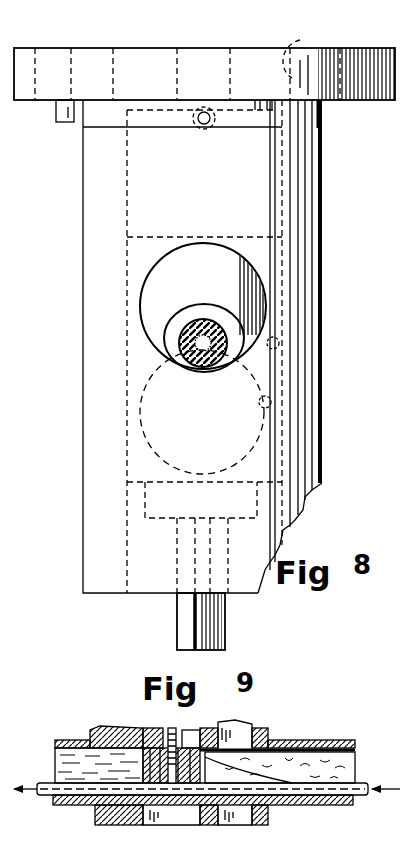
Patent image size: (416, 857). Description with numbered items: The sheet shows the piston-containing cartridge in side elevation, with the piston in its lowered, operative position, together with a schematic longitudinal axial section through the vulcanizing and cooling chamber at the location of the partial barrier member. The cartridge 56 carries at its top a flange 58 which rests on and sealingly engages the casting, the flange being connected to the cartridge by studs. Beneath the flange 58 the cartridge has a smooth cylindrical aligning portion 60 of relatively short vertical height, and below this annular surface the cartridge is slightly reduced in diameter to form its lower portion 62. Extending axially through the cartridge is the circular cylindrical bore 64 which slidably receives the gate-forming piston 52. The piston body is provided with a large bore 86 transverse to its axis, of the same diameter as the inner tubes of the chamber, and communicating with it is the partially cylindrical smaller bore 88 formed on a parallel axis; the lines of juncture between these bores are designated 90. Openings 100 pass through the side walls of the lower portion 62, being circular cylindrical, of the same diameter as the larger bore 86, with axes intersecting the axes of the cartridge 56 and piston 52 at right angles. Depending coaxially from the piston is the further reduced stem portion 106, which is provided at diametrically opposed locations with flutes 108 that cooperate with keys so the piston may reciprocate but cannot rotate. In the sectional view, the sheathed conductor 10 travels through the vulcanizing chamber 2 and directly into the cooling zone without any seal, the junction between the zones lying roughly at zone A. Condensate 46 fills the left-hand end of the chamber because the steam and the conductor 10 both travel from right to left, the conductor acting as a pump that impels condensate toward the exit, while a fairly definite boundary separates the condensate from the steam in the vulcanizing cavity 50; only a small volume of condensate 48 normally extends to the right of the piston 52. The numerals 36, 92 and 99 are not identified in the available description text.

In FIG. 9, the vulcanizing chamber 2 is at (302, 740).
In FIG. 8, the sheathed conductor 10 is at (193, 371).
In FIG. 9, the sheathed conductor 10 is at (366, 790).
In FIG. 9, the fibrous filler block 36 is at (80, 740).
In FIG. 9, the condensate 46 is at (70, 740).
In FIG. 9, the condensate 48 is at (248, 773).
In FIG. 9, the vulcanizing cavity 50 is at (340, 740).
In FIG. 8, the piston 52 is at (262, 460).
In FIG. 9, the piston 52 is at (163, 742).
In FIG. 8, the cartridge 56 is at (328, 267).
In FIG. 8, the flange 58 is at (361, 80).
In FIG. 8, the aligning portion 60 is at (326, 122).
In FIG. 8, the lower portion 62 is at (306, 468).
In FIG. 8, the bore 64 is at (280, 345).
In FIG. 8, the bore 86 is at (300, 390).
In FIG. 8, the smaller bore 88 is at (205, 306).
In FIG. 8, the lines of juncture 90 is at (0, 210).
In FIG. 8, the base 92 is at (0, 648).
In FIG. 8, the hole 99 is at (307, 52).
In FIG. 8, the openings 100 is at (228, 253).
In FIG. 8, the stem portion 106 is at (185, 610).
In FIG. 8, the flutes 108 is at (205, 630).
In FIG. 9, the zone A is at (273, 730).